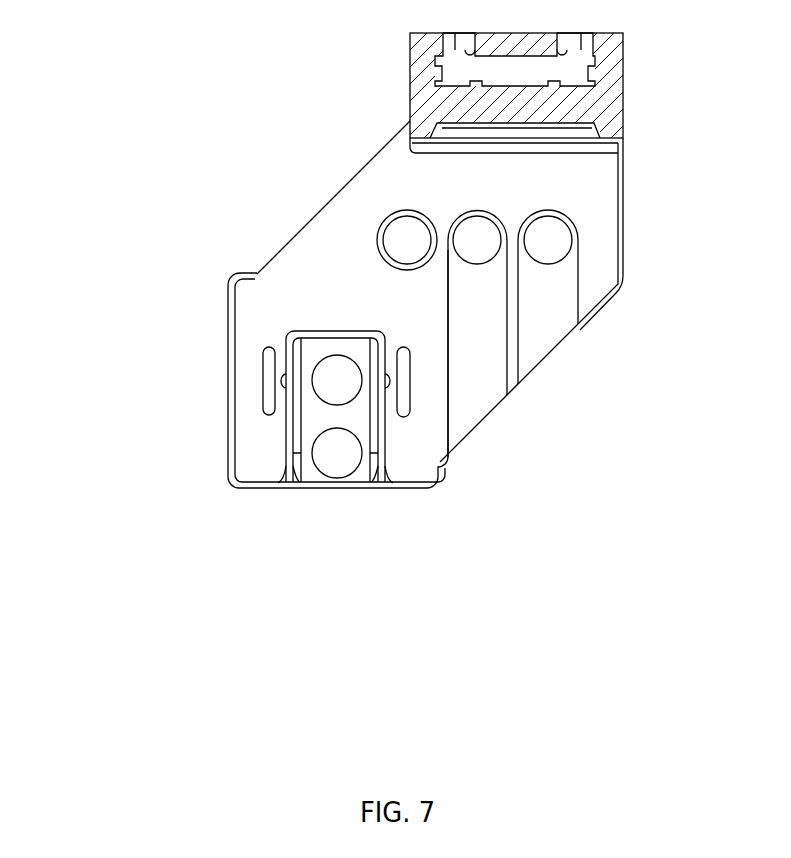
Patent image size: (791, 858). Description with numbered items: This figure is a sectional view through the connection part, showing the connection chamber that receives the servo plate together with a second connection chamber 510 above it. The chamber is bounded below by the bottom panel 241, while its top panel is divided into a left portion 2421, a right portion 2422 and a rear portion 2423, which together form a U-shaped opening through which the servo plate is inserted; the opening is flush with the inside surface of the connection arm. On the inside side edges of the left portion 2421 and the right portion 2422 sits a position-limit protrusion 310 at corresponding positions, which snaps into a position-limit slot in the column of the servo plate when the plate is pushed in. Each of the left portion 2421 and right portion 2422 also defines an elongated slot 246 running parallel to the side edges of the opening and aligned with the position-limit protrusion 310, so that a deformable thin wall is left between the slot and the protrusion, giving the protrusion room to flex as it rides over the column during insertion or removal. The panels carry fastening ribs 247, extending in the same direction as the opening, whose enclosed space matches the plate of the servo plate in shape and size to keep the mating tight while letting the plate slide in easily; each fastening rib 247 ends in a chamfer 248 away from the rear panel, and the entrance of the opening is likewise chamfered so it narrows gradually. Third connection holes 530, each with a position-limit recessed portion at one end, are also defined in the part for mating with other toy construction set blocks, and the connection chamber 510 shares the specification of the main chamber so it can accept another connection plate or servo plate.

The connection chamber 510 is at (623, 75).
The third connection hole 530 is at (555, 243).
The left portion 2421 is at (247, 390).
The right portion 2422 is at (425, 362).
The rear portion 2423 is at (327, 318).
The bottom panel 241 is at (310, 468).
The elongated slot 246 is at (405, 395).
The fastening rib 247 is at (377, 468).
The chamfer 248 is at (280, 485).
The position-limit protrusion 310 is at (380, 380).